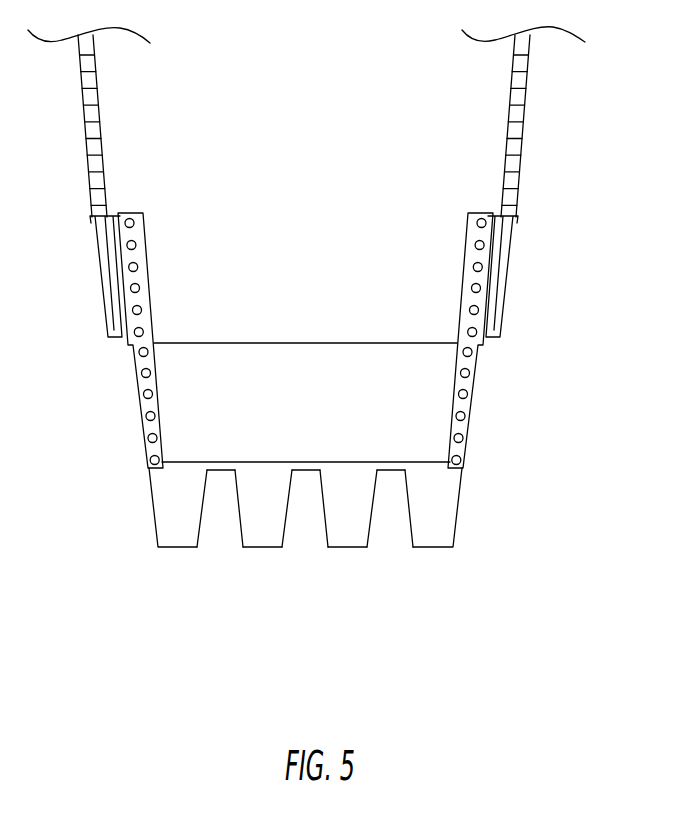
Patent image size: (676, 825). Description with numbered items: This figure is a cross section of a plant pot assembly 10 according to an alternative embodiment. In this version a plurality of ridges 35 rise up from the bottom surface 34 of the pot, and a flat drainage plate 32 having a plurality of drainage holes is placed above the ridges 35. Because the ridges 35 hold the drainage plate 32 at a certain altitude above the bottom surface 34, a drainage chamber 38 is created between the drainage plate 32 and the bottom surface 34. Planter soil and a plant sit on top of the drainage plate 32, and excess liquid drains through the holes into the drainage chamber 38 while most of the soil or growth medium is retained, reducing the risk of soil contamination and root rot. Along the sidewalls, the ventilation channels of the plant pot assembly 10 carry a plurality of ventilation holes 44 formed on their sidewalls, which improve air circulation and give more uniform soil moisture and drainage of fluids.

The plant pot assembly 10 is at (444, 175).
The drainage plate 32 is at (348, 462).
The bottom surface 34 is at (178, 550).
The ridges 35 is at (247, 408).
The drainage chamber 38 is at (395, 527).
The ventilation holes 44 is at (144, 399).